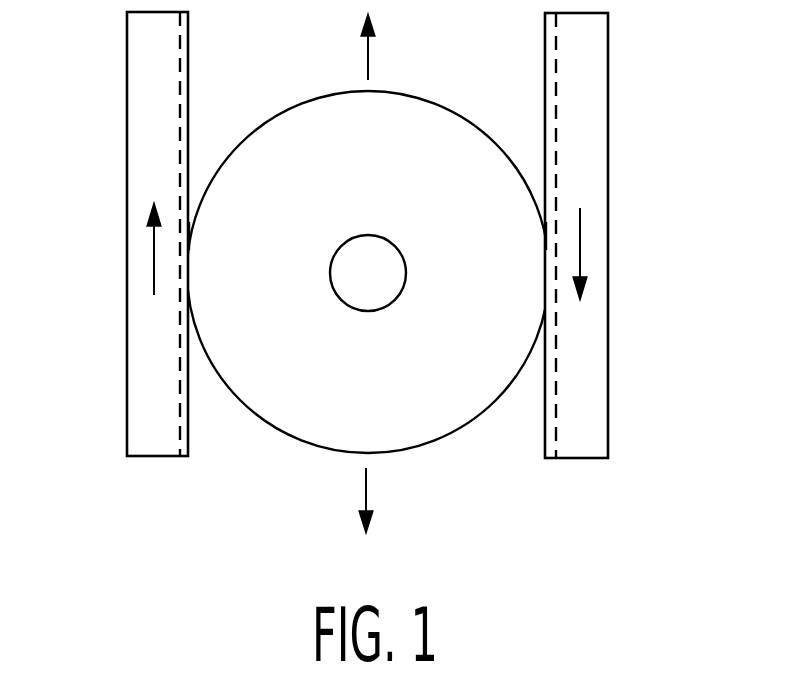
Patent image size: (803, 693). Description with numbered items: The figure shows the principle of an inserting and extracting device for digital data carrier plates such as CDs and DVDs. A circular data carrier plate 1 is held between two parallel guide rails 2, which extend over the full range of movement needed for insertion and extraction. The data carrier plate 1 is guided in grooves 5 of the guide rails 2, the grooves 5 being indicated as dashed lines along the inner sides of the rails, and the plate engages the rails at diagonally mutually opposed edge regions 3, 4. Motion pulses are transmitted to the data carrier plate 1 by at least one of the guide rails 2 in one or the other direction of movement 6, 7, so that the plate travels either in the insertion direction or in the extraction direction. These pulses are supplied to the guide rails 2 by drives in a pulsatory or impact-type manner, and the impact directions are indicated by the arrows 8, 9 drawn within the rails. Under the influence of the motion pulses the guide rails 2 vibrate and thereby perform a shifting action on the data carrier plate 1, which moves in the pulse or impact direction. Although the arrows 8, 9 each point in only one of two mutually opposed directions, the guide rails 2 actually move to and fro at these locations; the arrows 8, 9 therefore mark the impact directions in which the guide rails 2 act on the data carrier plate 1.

The data carrier plate 1 is at (322, 117).
The guide rails 2 is at (140, 105).
The edge region 3 is at (192, 208).
The edge region 4 is at (543, 210).
The grooves 5 is at (181, 42).
The direction of movement 6 is at (370, 58).
The direction of movement 7 is at (367, 487).
The arrow 8 is at (152, 243).
The arrow 9 is at (580, 248).